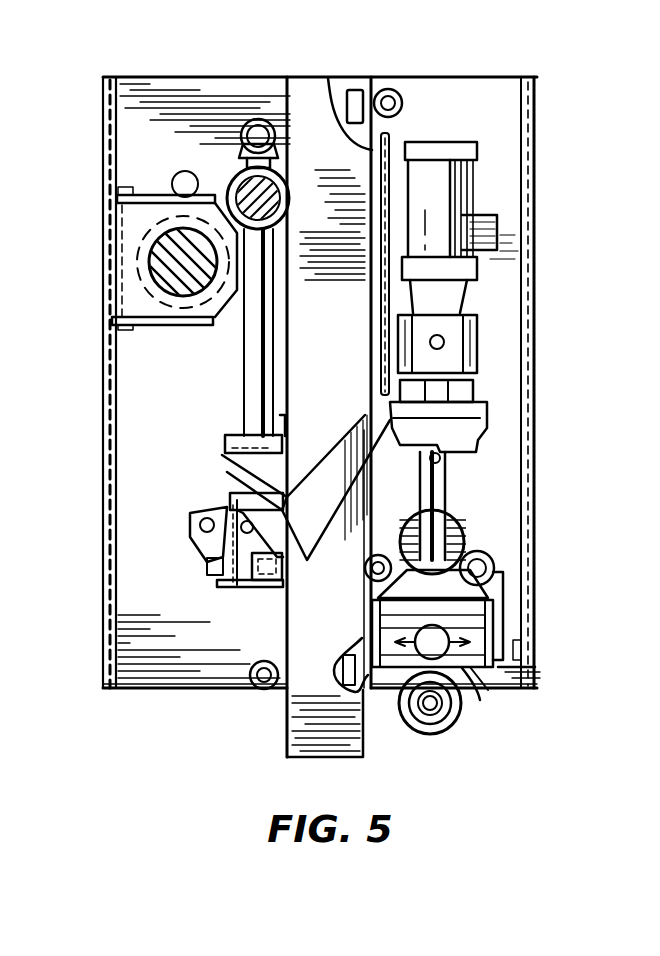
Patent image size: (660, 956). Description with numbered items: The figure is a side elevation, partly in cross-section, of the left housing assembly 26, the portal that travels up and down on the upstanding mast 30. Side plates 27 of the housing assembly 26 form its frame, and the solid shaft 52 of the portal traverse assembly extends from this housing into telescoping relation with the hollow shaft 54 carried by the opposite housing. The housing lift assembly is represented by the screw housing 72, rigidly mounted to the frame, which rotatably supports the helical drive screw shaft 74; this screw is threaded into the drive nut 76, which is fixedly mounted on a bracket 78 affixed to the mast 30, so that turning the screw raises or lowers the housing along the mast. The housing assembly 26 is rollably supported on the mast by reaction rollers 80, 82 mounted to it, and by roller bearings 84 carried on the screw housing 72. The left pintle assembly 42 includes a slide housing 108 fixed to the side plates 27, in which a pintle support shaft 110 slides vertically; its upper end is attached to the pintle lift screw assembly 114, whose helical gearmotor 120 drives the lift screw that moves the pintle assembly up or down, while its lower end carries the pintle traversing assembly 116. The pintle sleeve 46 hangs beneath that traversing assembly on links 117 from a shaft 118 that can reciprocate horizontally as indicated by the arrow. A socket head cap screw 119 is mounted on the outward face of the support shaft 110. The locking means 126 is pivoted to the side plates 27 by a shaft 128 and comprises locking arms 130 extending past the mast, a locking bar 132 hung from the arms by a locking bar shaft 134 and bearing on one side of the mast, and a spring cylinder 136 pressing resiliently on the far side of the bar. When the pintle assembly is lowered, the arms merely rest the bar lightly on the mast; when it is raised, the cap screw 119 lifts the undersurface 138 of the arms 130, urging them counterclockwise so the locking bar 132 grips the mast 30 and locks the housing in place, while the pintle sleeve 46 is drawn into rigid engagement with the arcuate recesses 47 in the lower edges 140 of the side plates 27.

The left housing assembly 26 is at (552, 152).
The side plates 27 is at (120, 578).
The mast 30 is at (278, 742).
The left pintle assembly 42 is at (533, 490).
The pintle sleeve 46 is at (432, 735).
The arcuate recesses 47 is at (475, 702).
The solid shaft 52 is at (150, 265).
The hollow shaft 54 is at (136, 330).
The screw housing 72 is at (284, 186).
The helical drive screw shaft 74 is at (250, 354).
The drive nut 76 is at (226, 458).
The bracket 78 is at (287, 436).
The reaction rollers 80 is at (392, 90).
The reaction rollers 82 is at (355, 93).
The roller bearings 84 is at (288, 236).
The slide housing 108 is at (455, 540).
The pintle support shaft 110 is at (447, 494).
The pintle lift screw assembly 114 is at (512, 299).
The pintle traversing assembly 116 is at (497, 588).
The links 117 is at (385, 700).
The shaft 118 is at (460, 668).
The socket head cap screws 119 is at (440, 450).
The helical gearmotor 120 is at (445, 162).
The locking means 126 is at (318, 585).
The shaft 128 is at (200, 522).
The locking arms 130 is at (330, 517).
The locking bar 132 is at (271, 590).
The locking bar shaft 134 is at (248, 503).
The spring cylinder 136 is at (250, 590).
The undersurface 138 is at (458, 460).
The lower edges 140 is at (518, 690).